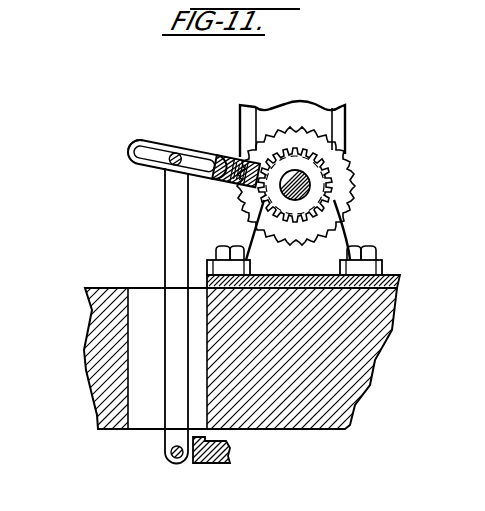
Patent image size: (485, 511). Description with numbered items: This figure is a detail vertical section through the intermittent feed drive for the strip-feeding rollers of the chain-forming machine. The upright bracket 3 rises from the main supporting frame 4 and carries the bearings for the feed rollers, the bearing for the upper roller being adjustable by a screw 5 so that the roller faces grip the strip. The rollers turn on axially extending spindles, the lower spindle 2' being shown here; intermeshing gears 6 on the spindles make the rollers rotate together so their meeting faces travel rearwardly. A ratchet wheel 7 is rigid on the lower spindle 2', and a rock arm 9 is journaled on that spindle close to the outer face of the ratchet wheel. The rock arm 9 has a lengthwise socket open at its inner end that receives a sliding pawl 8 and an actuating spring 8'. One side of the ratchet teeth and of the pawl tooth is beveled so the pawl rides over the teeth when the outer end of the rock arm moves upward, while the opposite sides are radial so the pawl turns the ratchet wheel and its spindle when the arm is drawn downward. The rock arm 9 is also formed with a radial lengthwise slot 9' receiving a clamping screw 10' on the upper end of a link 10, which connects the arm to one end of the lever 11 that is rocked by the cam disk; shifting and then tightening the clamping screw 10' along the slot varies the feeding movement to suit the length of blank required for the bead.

The spindle 2' is at (316, 183).
The upright bracket 3 is at (345, 118).
The main supporting frame 4 is at (88, 347).
The screw 5 is at (302, 281).
The intermeshing gear 6 is at (307, 106).
The ratchet wheel 7 is at (328, 196).
The sliding pawl 8 is at (236, 159).
The actuating spring 8' is at (225, 190).
The rock arm 9 is at (177, 151).
The radial lengthwise slot 9' is at (136, 167).
The link 10 is at (160, 316).
The clamping screw 10' is at (173, 143).
The lever 11 is at (231, 452).